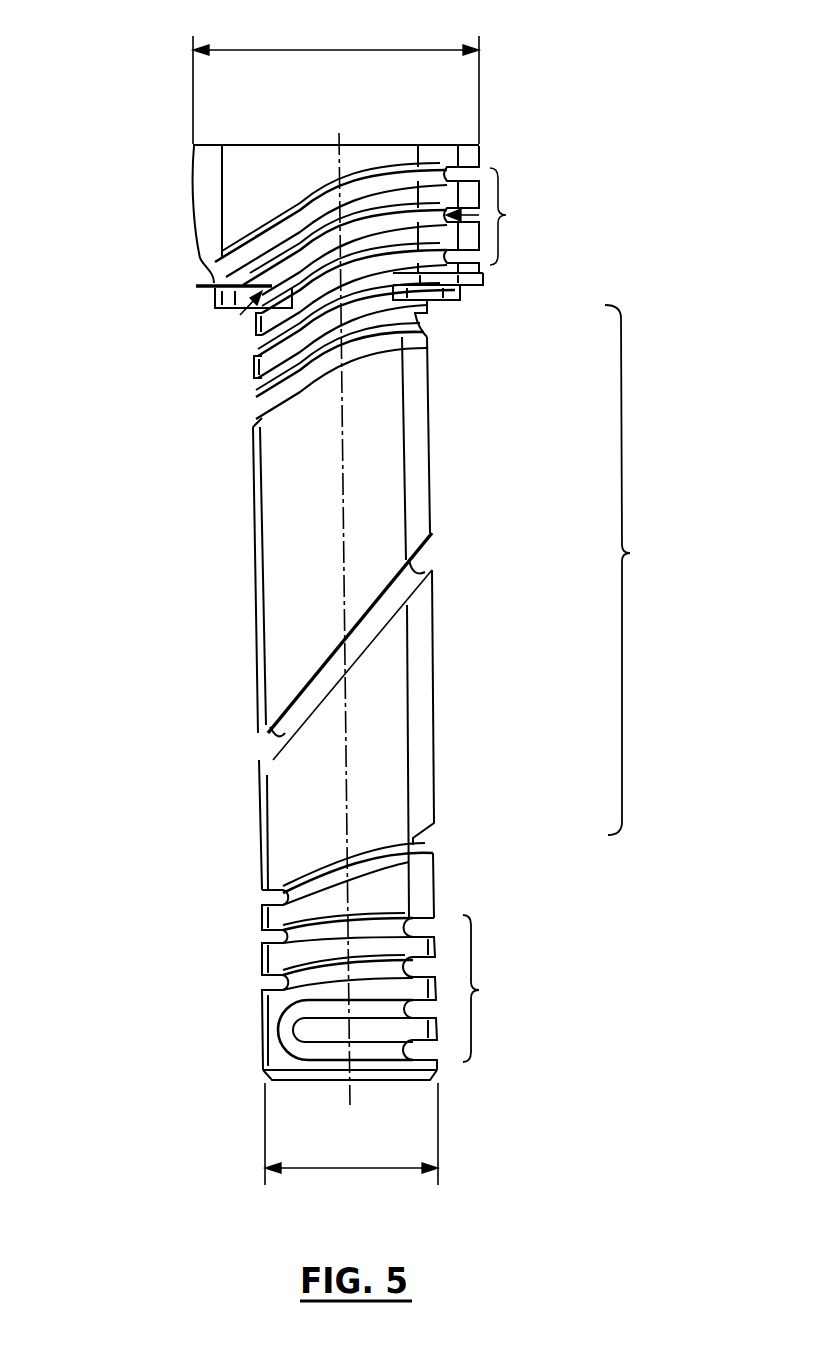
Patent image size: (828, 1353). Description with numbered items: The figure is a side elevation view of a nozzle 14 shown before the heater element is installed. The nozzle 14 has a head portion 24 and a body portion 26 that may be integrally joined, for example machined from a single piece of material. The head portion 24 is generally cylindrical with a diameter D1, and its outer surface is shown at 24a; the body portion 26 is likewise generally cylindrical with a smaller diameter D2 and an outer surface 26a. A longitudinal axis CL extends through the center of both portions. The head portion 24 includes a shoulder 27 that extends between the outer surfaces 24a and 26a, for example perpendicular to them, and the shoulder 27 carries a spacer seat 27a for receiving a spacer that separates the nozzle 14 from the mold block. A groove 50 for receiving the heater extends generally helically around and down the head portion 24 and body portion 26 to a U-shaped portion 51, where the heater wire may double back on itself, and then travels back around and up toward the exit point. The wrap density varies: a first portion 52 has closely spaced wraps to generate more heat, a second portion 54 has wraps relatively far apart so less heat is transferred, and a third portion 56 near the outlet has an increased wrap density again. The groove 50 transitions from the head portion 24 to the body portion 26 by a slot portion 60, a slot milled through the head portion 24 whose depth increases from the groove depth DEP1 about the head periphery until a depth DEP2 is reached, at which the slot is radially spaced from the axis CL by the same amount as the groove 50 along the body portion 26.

The nozzle 14 is at (482, 196).
The head portion 24 is at (228, 203).
The outer surface of the head portion 24a is at (482, 150).
The body portion 26 is at (275, 477).
The outer surface of the body portion 26a is at (432, 622).
The shoulder 27 is at (432, 305).
The spacer seat 27a is at (472, 288).
The groove 50 is at (430, 563).
The U-shaped portion 51 is at (282, 1027).
The first portion of the groove 52 is at (506, 215).
The second portion of the groove 54 is at (641, 570).
The third portion of the groove 56 is at (479, 990).
The slot portion 60 is at (373, 250).
The longitudinal axis CL is at (348, 762).
The depth of the groove about the head portion DEP1 is at (470, 216).
The depth reached by the slot portion DEP2 is at (256, 298).
The diameter of the head portion D1 is at (336, 77).
The diameter of the body portion D2 is at (351, 1148).